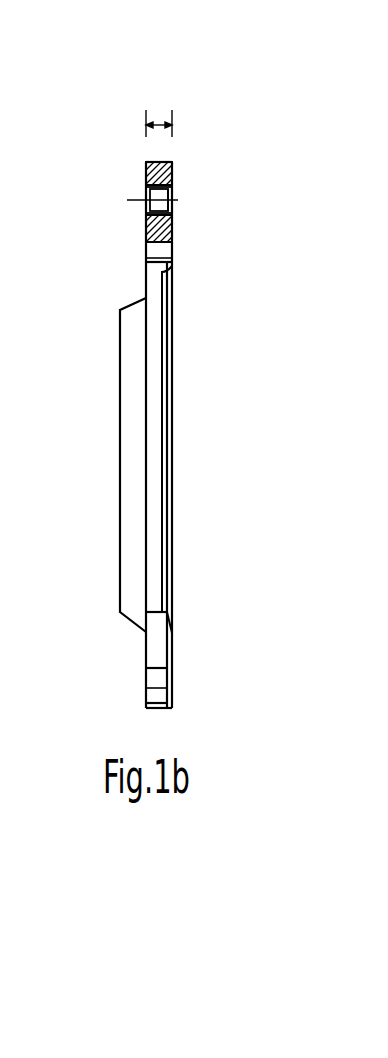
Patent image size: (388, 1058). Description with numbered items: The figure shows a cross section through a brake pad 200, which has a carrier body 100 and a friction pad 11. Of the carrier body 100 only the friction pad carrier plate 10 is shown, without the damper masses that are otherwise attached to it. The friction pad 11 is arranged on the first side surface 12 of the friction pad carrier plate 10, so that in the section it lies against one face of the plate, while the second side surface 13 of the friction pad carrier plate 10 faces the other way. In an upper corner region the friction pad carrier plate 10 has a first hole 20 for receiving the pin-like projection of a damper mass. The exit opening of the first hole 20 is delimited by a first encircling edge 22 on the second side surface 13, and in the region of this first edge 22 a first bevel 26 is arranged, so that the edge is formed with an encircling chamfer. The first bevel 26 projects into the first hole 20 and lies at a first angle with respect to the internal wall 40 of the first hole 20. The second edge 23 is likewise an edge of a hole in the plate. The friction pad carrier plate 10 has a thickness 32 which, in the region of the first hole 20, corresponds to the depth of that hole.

The friction pad carrier plate 10 is at (162, 655).
The friction pad 11 is at (137, 322).
The first side surface of the friction pad carrier plate 12 is at (147, 258).
The second side surface of the friction pad carrier plate 13 is at (172, 633).
The first hole 20 is at (147, 190).
The first edge of the first hole 22 is at (173, 186).
The second edge of the second hole 23 is at (146, 163).
The first bevel 26 is at (174, 198).
The thickness of the friction pad carrier plate 32 is at (158, 122).
The internal wall of the first hole 40 is at (128, 200).
The carrier body 100 is at (163, 688).
The brake pad 200 is at (214, 123).